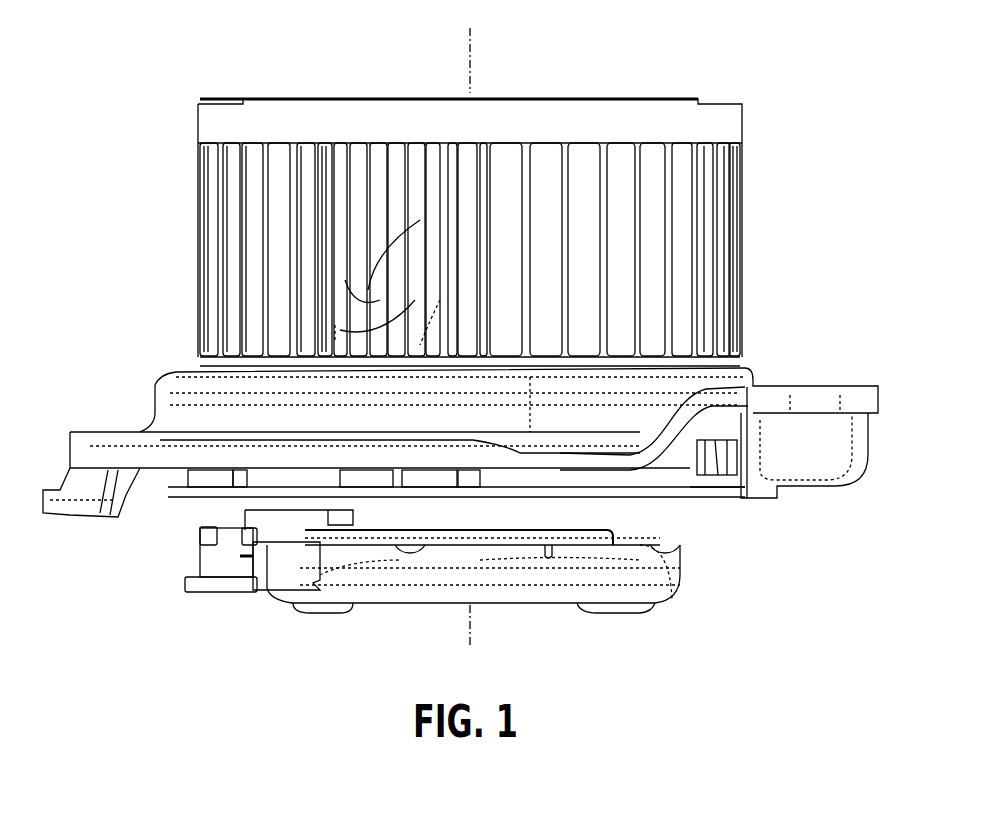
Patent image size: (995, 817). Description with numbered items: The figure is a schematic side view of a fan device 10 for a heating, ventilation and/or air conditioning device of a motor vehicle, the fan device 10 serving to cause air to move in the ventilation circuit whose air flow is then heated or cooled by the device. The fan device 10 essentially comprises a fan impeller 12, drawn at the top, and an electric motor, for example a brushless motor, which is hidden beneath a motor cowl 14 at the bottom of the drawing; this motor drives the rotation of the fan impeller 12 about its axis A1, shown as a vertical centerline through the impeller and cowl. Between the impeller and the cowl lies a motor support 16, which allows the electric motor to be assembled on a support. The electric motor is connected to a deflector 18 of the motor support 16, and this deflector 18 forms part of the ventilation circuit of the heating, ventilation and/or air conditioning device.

The fan device 10 is at (157, 110).
The axis A1 is at (474, 50).
The fan impeller 12 is at (727, 121).
The motor cowl 14 is at (633, 592).
The motor support 16 is at (706, 477).
The deflector 18 is at (663, 392).